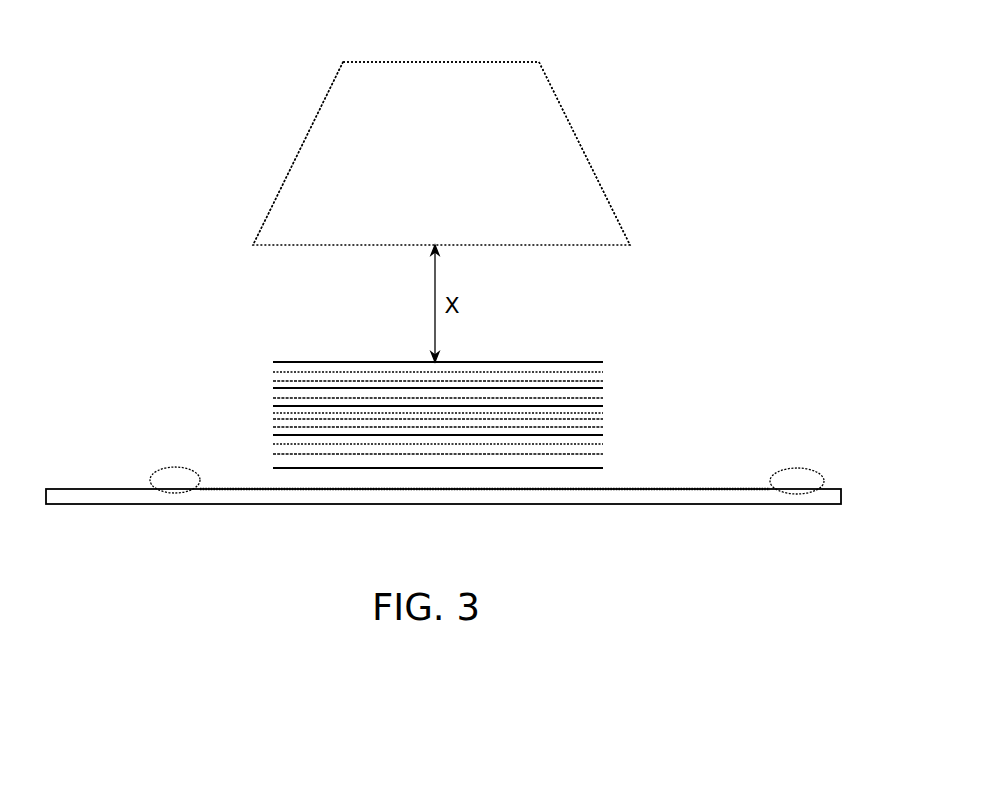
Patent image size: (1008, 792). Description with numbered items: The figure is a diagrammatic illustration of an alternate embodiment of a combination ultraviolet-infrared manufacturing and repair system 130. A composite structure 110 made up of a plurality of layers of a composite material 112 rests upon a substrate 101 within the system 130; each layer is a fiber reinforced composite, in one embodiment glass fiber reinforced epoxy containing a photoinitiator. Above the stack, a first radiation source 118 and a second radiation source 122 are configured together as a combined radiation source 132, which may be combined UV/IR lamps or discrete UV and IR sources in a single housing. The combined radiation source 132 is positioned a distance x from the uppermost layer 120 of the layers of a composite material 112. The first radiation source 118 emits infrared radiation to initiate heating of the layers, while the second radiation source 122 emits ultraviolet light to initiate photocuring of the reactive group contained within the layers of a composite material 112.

The combination UV-IR manufacturing and repair system 130 is at (700, 50).
The combined radiation source 132 is at (462, 80).
The second radiation source 122 is at (335, 102).
The first radiation source 118 is at (553, 128).
The uppermost layer 120 is at (537, 366).
The layers of a composite material 112 is at (603, 398).
The composite structure 110 is at (250, 363).
The substrate 101 is at (661, 495).